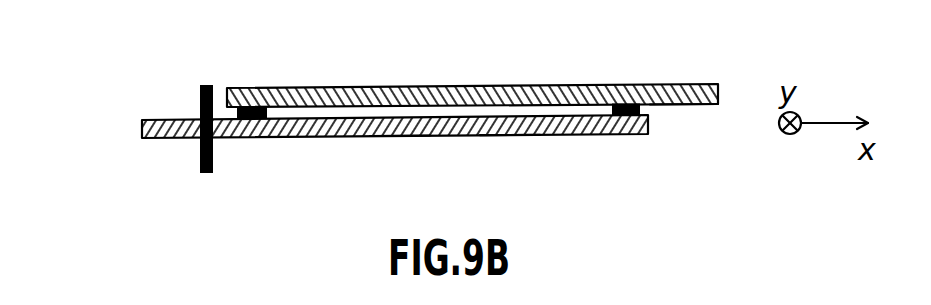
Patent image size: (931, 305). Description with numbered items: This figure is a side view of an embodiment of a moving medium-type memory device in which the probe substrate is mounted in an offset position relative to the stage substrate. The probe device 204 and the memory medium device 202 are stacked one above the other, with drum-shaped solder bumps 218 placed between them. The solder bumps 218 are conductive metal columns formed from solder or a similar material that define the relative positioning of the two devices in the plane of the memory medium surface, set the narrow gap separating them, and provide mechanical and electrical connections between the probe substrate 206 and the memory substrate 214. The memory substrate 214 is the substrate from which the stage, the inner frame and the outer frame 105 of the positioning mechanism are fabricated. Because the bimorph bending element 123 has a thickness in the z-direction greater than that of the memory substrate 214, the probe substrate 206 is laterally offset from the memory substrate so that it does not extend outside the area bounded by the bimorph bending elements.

The bimorph bending element 123 is at (203, 86).
The memory medium device 202 is at (517, 71).
The probe device 204 is at (163, 139).
The probe substrate 206 is at (680, 106).
The memory substrate 214 is at (395, 136).
The outer frame 105 is at (511, 136).
The solder bumps 218 is at (247, 139).